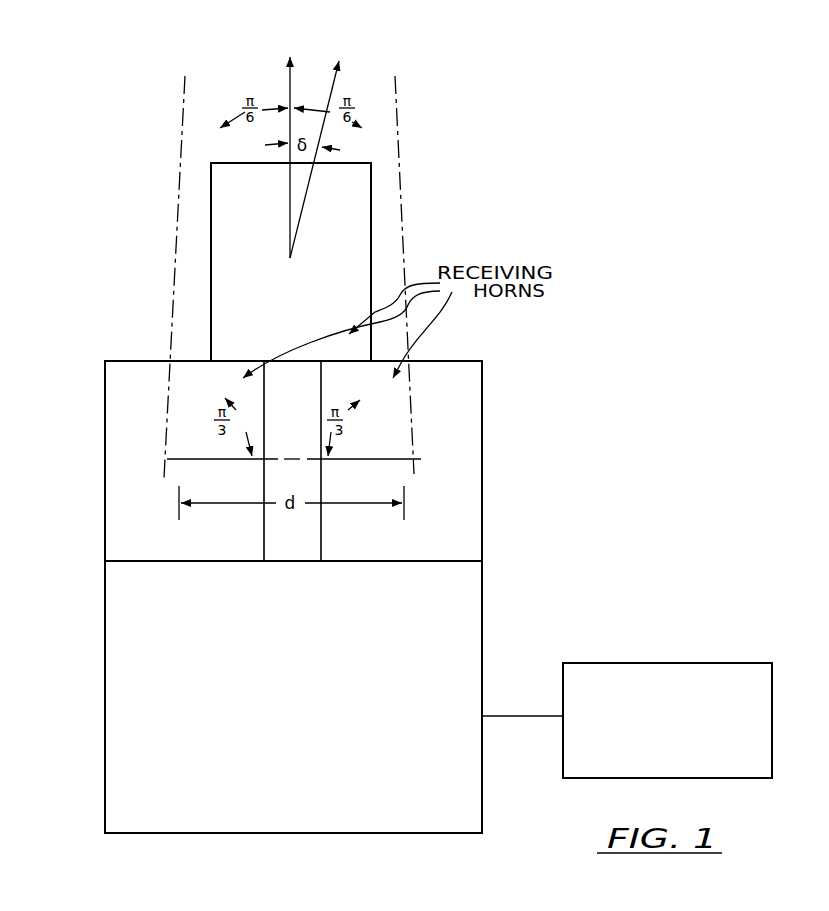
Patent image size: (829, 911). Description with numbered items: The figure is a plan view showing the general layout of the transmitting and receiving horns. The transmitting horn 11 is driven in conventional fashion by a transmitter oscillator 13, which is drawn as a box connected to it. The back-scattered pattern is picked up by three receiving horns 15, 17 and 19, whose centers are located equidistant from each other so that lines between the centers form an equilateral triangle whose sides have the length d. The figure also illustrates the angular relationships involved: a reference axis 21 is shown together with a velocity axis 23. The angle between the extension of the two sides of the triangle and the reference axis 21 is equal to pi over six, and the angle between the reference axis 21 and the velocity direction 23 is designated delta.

The transmitting horn 11 is at (483, 607).
The transmitter oscillator 13 is at (680, 663).
The receiving horn 15 is at (371, 211).
The receiving horn 17 is at (105, 463).
The receiving horn 19 is at (482, 466).
The reference axis 21 is at (290, 82).
The velocity axis 23 is at (355, 80).